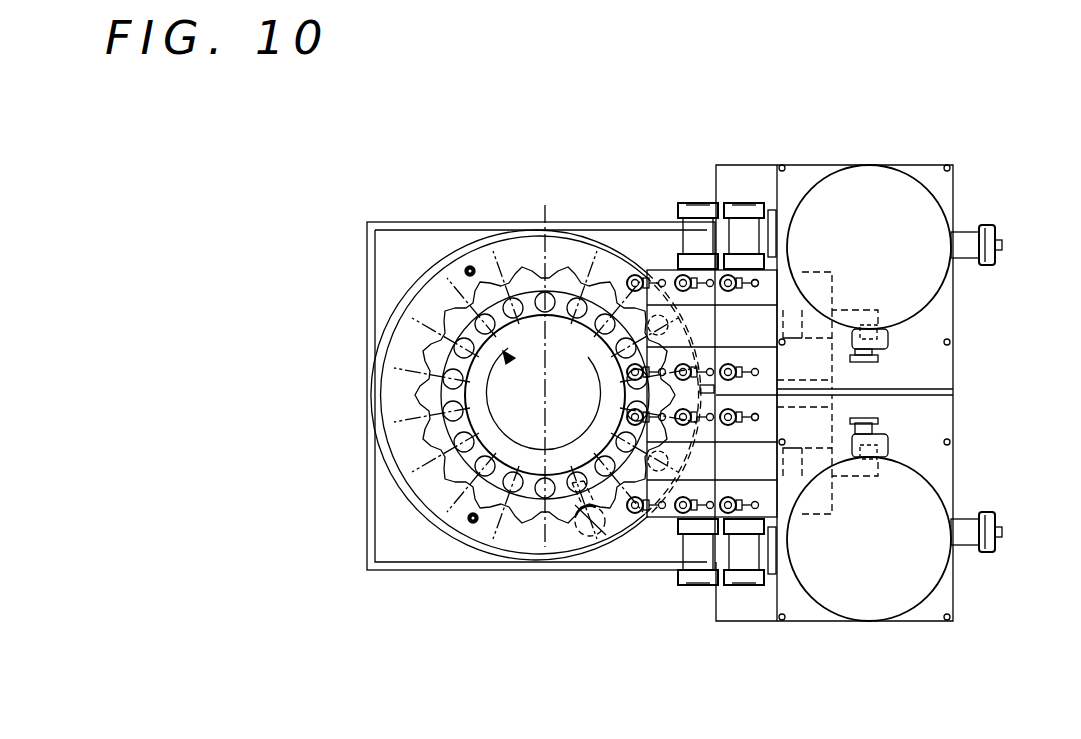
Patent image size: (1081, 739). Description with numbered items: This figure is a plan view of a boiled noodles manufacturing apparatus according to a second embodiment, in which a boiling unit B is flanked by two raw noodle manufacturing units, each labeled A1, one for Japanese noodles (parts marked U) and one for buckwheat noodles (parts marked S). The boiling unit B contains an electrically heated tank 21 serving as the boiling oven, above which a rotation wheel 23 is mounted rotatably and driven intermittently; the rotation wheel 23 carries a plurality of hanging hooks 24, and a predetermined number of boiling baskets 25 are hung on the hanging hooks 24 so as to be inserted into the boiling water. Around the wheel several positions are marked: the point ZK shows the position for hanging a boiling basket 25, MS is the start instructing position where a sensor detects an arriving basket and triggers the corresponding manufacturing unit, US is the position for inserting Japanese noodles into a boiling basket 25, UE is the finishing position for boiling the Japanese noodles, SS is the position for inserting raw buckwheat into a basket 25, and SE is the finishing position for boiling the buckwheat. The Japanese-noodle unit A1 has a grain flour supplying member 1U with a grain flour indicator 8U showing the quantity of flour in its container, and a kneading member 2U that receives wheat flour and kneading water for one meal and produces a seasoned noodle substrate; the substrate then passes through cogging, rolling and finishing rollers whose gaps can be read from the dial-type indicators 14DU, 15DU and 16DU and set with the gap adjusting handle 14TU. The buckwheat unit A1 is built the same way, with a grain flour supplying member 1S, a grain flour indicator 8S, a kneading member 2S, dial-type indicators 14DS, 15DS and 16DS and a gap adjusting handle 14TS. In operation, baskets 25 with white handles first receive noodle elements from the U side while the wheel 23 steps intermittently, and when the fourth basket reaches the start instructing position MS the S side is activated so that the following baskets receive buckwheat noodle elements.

The boiling unit B is at (368, 222).
The finishing position of boiling the Japanese noodles UE is at (468, 266).
The basket hanging position ZK is at (540, 258).
The start instructing position MS is at (590, 263).
The rotation wheel 23 is at (561, 394).
The hanging hooks 24 is at (437, 401).
The electrically heated tank 21 is at (517, 537).
The boiling baskets 25 is at (576, 533).
The finishing position of boiling the buckwheat SE is at (473, 518).
The buckwheat inserting position SS is at (657, 522).
The Japanese noodle inserting position US is at (668, 325).
The dial-type indicator of the finishing roller 16DU is at (633, 276).
The dial-type indicator of the rolling roller 15DU is at (677, 277).
The dial-type indicator of the cogging roller 14DU is at (731, 276).
The gap adjusting handle of the cogging roller 14TU is at (760, 283).
The gap adjusting handle of the cogging roller 14TS is at (762, 415).
The dial-type indicator of the cogging roller 14DS is at (733, 495).
The dial-type indicator of the finishing roller 16DS is at (637, 512).
The dial-type indicator of the rolling roller 15DS is at (688, 513).
The raw noodle manufacturing unit A1 is at (872, 164).
The grain flour supplying member 1U is at (922, 207).
The grain flour indicator 8U is at (987, 227).
The kneading member 2U is at (862, 307).
The grain flour supplying member 1S is at (912, 487).
The grain flour indicator 8S is at (987, 515).
The kneading member 2S is at (858, 482).